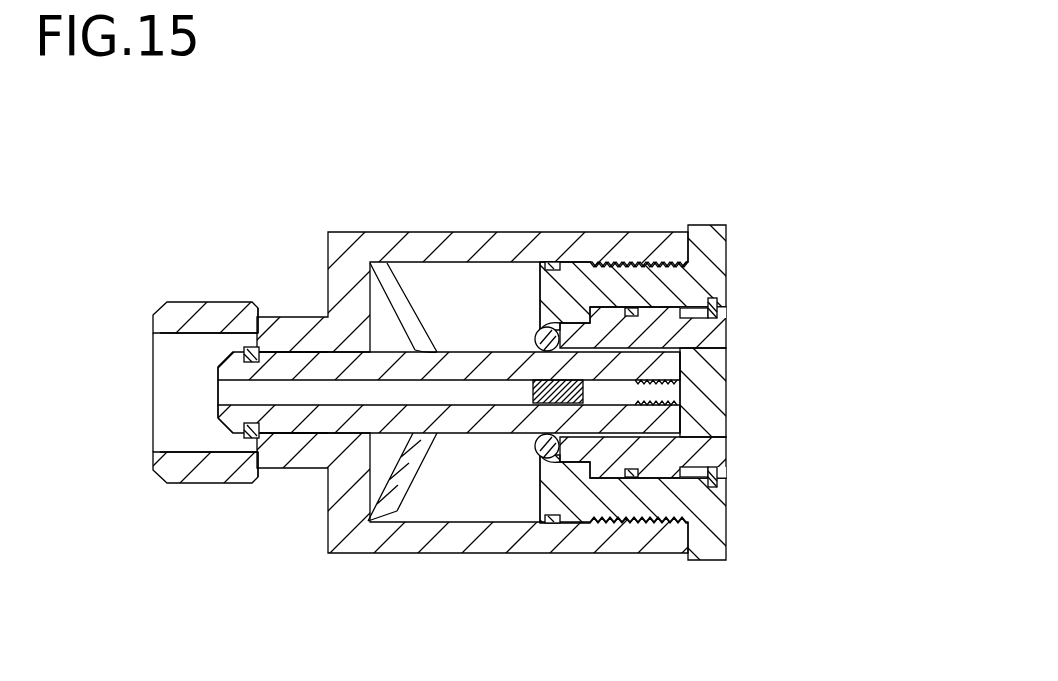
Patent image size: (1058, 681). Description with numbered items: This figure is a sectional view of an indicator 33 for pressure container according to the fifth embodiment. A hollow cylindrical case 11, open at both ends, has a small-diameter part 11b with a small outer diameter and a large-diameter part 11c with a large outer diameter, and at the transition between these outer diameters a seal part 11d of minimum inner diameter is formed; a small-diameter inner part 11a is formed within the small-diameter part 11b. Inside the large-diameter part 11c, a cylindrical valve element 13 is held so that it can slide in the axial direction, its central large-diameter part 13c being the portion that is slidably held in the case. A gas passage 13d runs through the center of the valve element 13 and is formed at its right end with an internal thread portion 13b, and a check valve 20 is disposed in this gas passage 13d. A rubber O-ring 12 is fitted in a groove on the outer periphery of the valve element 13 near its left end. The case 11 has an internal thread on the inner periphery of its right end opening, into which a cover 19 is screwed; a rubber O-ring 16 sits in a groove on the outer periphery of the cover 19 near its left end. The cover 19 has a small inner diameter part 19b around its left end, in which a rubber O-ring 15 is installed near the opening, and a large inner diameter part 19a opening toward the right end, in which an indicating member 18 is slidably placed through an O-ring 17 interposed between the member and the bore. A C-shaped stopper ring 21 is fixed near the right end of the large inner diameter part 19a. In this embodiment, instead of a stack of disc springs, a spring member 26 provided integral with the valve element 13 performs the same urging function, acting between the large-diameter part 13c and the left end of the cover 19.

The case 11 is at (180, 300).
The small-diameter inner part 11a is at (190, 338).
The small-diameter part 11b is at (217, 310).
The large-diameter part 11c is at (427, 232).
The seal part 11d is at (280, 436).
The O-ring 12 is at (253, 347).
The valve element 13 is at (303, 373).
The internal thread portion 13b is at (682, 388).
The large-diameter part 13c is at (404, 516).
The gas passage 13d is at (246, 408).
The O-ring 15 is at (538, 330).
The O-ring 16 is at (551, 263).
The O-ring 17 is at (630, 308).
The indicating member 18 is at (661, 310).
The cover 19 is at (718, 226).
The large inner diameter part 19a is at (698, 340).
The small inner diameter part 19b is at (583, 320).
The check valve 20 is at (600, 394).
The C-shaped stopper ring 21 is at (717, 312).
The spring member 26 is at (383, 263).
The indicator for pressure container 33 is at (777, 211).